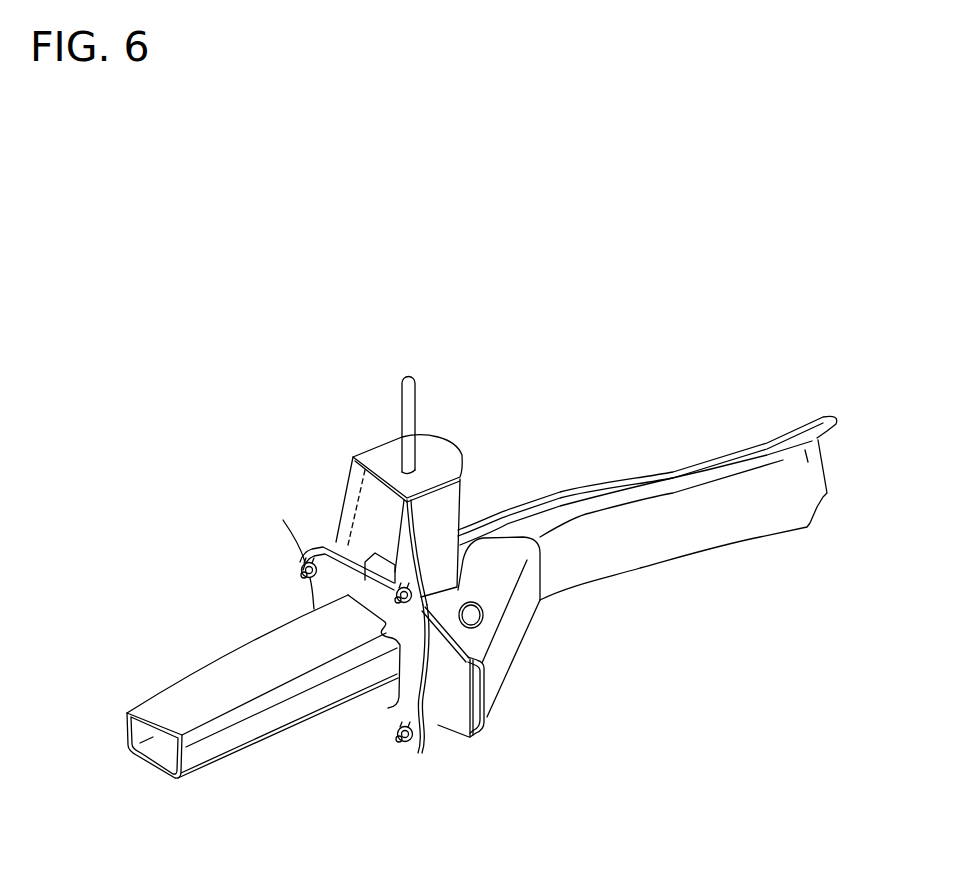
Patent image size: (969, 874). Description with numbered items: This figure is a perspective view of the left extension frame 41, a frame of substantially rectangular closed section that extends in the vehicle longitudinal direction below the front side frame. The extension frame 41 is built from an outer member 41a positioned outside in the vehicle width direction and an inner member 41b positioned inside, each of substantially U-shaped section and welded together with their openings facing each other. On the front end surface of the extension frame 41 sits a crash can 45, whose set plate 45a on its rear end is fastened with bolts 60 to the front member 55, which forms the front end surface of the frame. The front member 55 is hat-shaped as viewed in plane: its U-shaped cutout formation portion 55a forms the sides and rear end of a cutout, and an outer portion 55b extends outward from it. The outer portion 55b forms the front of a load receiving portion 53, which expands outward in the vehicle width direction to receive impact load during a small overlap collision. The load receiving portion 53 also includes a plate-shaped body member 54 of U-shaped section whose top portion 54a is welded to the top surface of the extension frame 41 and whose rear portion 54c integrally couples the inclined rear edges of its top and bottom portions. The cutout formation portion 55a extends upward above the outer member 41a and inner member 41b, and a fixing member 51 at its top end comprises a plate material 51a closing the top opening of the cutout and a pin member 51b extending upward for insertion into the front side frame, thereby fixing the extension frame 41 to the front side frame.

The extension frame 41 is at (647, 454).
The outer member 41a is at (762, 490).
The inner member 41b is at (690, 472).
The crash can 45 is at (180, 703).
The set plate 45a is at (398, 708).
The fixing member 51 is at (378, 418).
The plate material 51a is at (385, 455).
The pin member 51b is at (395, 381).
The load receiving portion 53 is at (487, 728).
The body member 54 is at (537, 571).
The top portion 54a is at (505, 553).
The rear portion 54c is at (520, 612).
The front member 55 is at (399, 617).
The cutout formation portion 55a is at (459, 509).
The outer portion 55b is at (447, 710).
The bolt 60 is at (323, 547).